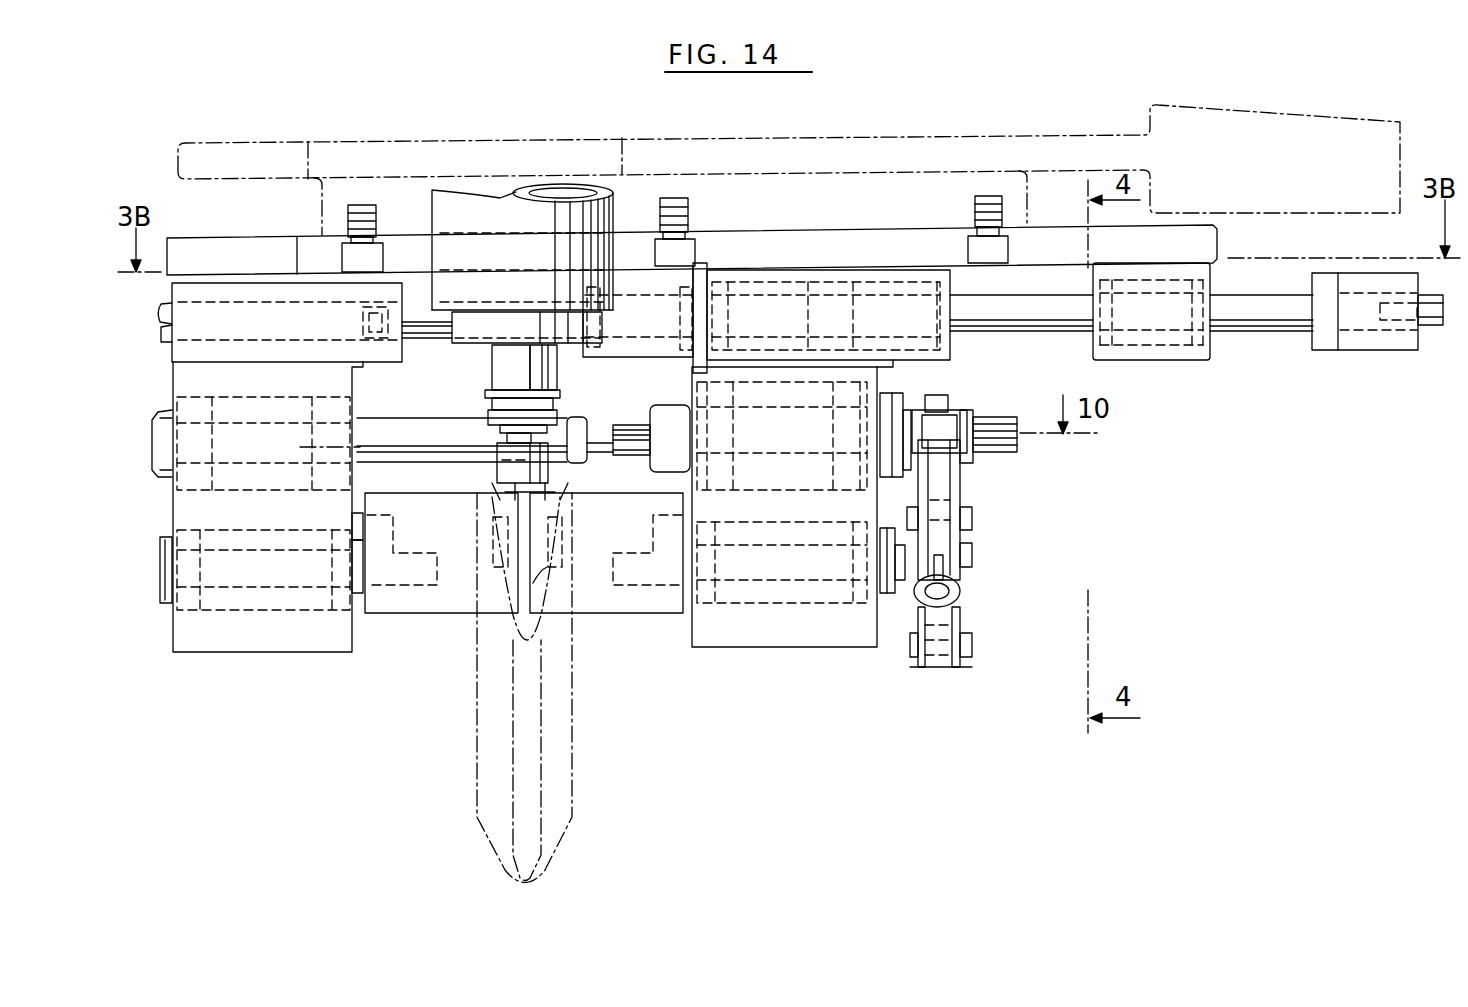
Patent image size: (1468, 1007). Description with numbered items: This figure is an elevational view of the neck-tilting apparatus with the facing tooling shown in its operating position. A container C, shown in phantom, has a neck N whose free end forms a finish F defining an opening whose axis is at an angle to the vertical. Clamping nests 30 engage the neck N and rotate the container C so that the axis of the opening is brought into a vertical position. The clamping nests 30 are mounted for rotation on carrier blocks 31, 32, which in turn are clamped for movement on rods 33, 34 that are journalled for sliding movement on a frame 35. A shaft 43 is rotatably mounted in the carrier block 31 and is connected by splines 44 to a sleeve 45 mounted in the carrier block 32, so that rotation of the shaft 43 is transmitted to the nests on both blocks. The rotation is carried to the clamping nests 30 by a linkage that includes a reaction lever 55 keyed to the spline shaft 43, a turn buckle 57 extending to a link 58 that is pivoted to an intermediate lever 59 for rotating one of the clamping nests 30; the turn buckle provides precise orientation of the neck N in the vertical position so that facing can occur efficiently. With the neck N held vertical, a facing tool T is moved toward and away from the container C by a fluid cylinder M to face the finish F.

The fluid cylinder M is at (470, 210).
The frame 35 is at (827, 243).
The shaft 43 is at (266, 430).
The carrier block 31 is at (298, 637).
The clamping nest 30 is at (408, 600).
The rod 34 is at (395, 428).
The splines 44 is at (627, 437).
The sleeve 45 is at (795, 412).
The carrier block 32 is at (783, 635).
The rod 33 is at (1050, 318).
The reaction lever 55 is at (957, 490).
The turn buckle 57 is at (960, 594).
The link 58 is at (938, 622).
The intermediate lever 59 is at (963, 663).
The finish F is at (497, 474).
The facing tool T is at (550, 478).
The neck N is at (575, 580).
The container C is at (575, 742).